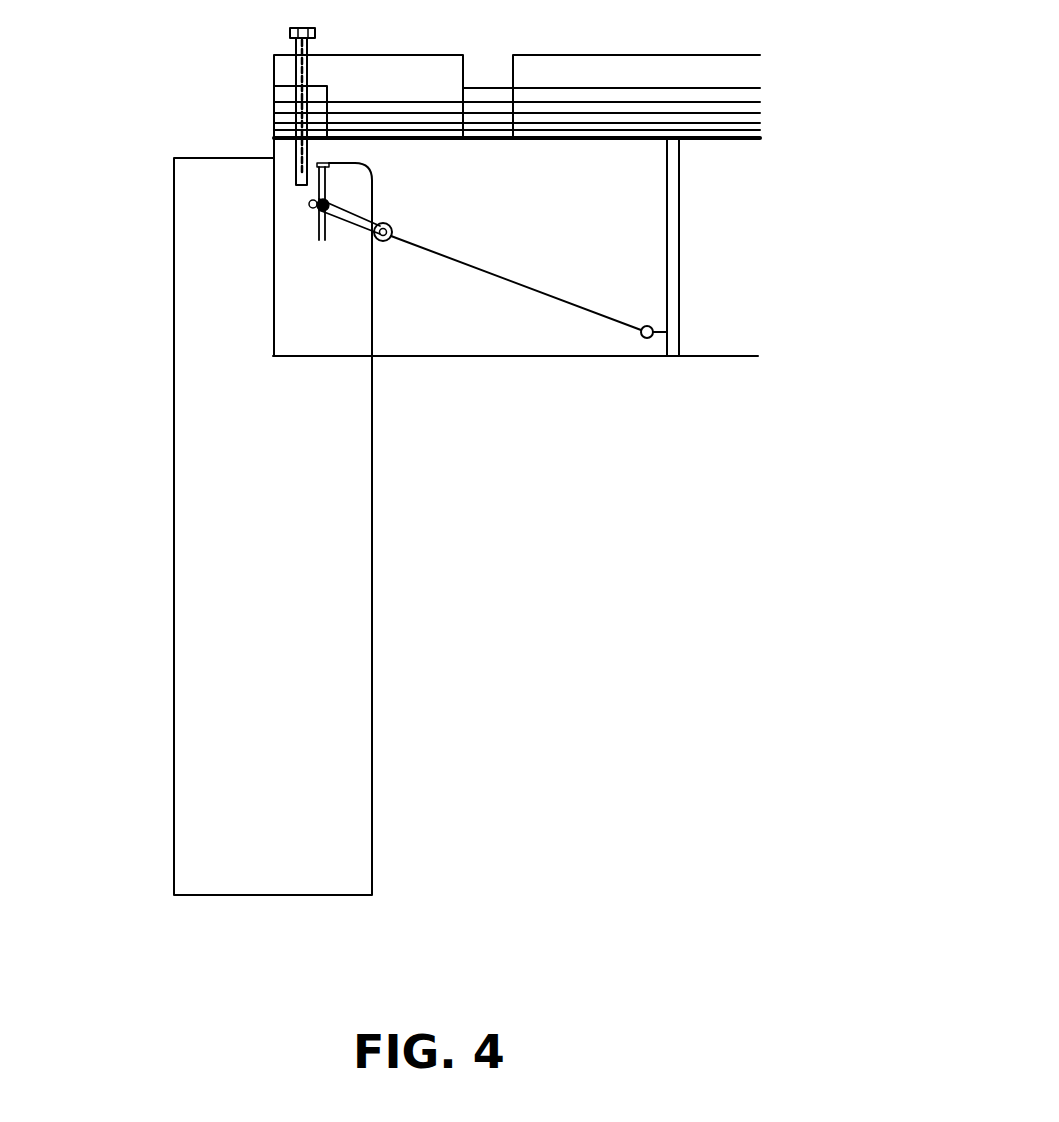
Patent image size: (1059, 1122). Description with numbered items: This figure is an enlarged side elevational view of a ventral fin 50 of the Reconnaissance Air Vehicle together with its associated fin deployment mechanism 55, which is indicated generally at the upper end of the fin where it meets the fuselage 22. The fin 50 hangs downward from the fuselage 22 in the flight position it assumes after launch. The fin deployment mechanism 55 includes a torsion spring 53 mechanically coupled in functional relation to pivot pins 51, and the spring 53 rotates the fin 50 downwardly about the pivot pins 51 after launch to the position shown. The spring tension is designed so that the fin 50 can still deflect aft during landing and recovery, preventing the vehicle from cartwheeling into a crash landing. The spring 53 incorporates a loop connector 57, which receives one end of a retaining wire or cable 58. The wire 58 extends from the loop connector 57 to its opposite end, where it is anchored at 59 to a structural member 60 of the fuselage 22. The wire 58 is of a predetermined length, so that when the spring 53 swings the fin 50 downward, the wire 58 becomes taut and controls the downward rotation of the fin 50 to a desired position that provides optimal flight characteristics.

The fuselage 22 is at (613, 358).
The ventral fin 50 is at (200, 613).
The pivot pin 51 is at (327, 217).
The torsion spring 53 is at (313, 203).
The fin deployment mechanism 55 is at (247, 182).
The loop connector 57 is at (392, 226).
The retaining wire 58 is at (483, 267).
The anchor point 59 is at (640, 332).
The structural member 60 is at (681, 275).